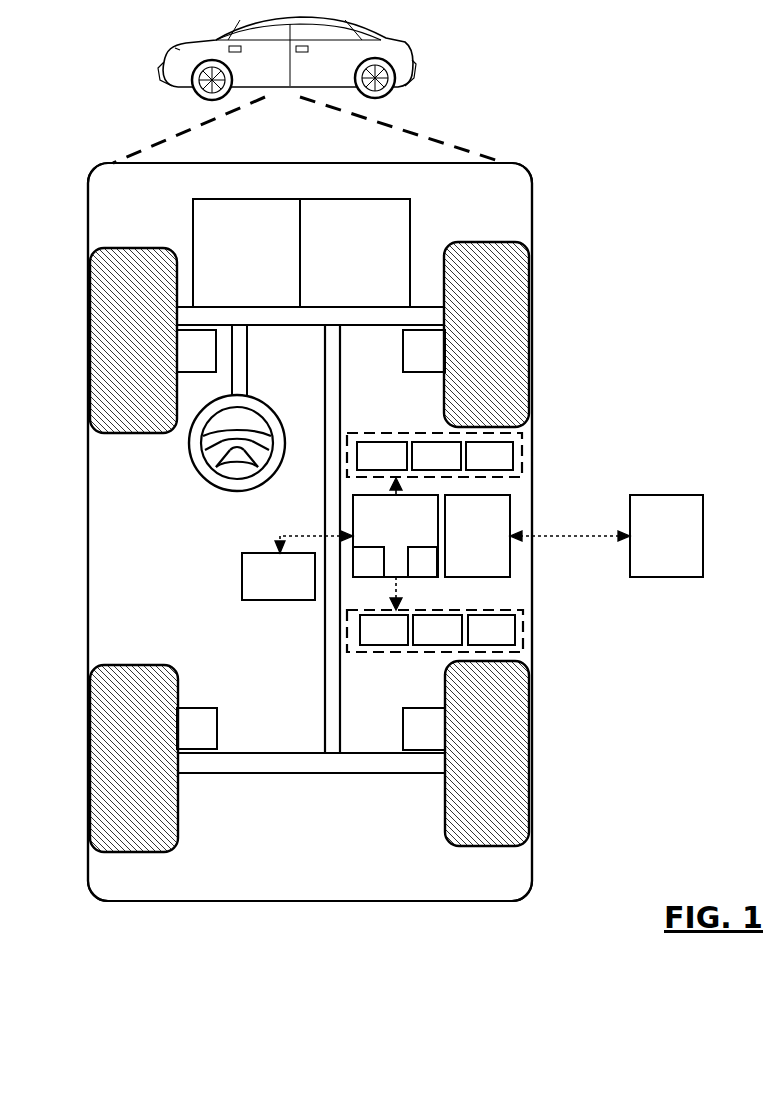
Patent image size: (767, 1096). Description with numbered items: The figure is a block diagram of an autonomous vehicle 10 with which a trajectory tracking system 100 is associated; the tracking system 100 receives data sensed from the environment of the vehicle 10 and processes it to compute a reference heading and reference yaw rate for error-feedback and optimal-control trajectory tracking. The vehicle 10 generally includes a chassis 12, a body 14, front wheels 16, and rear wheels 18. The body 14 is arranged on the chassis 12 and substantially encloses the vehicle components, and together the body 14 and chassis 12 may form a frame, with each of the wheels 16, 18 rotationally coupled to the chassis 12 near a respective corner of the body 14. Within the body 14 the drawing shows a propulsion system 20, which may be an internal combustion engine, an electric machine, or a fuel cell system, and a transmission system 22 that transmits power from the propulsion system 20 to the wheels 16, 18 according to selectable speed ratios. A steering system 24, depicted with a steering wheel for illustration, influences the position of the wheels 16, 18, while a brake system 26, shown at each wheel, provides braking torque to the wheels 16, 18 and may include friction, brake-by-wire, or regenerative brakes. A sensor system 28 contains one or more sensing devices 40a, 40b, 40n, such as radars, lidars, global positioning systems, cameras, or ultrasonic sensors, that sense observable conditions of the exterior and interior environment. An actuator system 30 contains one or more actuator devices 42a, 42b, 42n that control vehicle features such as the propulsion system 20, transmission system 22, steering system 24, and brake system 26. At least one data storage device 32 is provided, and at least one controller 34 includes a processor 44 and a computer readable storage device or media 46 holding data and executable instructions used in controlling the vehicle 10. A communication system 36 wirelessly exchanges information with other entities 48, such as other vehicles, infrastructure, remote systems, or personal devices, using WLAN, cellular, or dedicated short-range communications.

The vehicle 10 is at (168, 74).
The trajectory tracking system 100 is at (551, 185).
The chassis 12 is at (325, 672).
The body 14 is at (88, 506).
The front wheels 16 is at (128, 248).
The rear wheels 18 is at (148, 852).
The propulsion system 20 is at (246, 253).
The transmission system 22 is at (355, 253).
The steering system 24 is at (264, 344).
The brake system 26 is at (311, 540).
The sensor system 28 is at (434, 433).
The actuator system 30 is at (435, 652).
The data storage device 32 is at (297, 565).
The controller 34 is at (395, 544).
The communication system 36 is at (477, 536).
The sensing device 40a is at (382, 456).
The sensing device 40b is at (436, 456).
The sensing device 40n is at (489, 456).
The actuator device 42a is at (384, 630).
The actuator device 42b is at (437, 630).
The actuator device 42n is at (491, 630).
The processor 44 is at (368, 562).
The computer readable storage device or media 46 is at (422, 562).
The other entities 48 is at (606, 536).